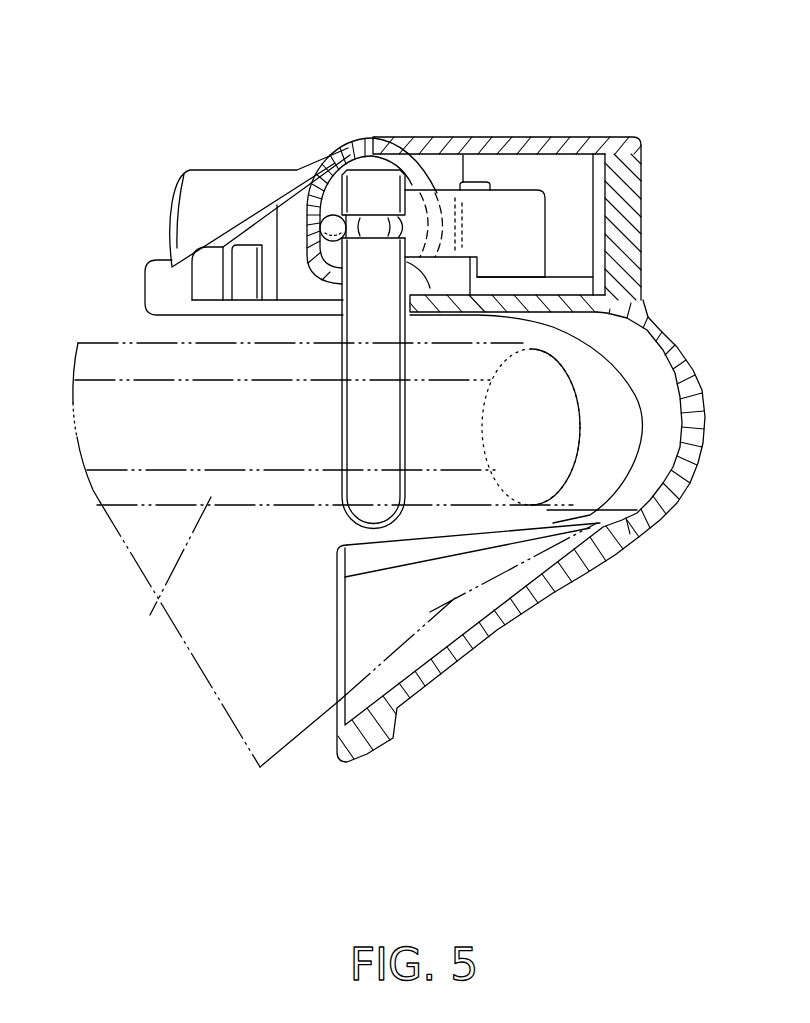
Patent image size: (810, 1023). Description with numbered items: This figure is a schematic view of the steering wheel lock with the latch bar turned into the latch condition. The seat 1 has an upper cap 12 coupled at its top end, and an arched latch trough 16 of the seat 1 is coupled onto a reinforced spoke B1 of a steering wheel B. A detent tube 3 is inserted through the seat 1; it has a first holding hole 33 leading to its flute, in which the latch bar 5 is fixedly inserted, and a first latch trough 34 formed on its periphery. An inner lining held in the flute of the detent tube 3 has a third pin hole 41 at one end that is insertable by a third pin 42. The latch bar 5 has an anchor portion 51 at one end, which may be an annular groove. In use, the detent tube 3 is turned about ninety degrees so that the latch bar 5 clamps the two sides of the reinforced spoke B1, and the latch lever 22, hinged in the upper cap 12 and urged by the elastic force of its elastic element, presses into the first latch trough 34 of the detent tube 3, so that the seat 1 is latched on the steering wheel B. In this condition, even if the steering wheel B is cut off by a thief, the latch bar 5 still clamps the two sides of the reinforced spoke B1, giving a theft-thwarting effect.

The seat 1 is at (630, 222).
The upper cap 12 is at (512, 150).
The arched latch trough 16 is at (648, 481).
The latch lever 22 is at (513, 200).
The detent tube 3 is at (308, 150).
The first holding hole 33 is at (343, 280).
The first latch trough 34 is at (433, 193).
The third pin hole 41 is at (320, 212).
The third pin 42 is at (320, 220).
The latch bar 5 is at (385, 483).
The anchor portion 51 is at (380, 213).
The steering wheel B is at (145, 632).
The reinforced spoke B1 is at (121, 440).